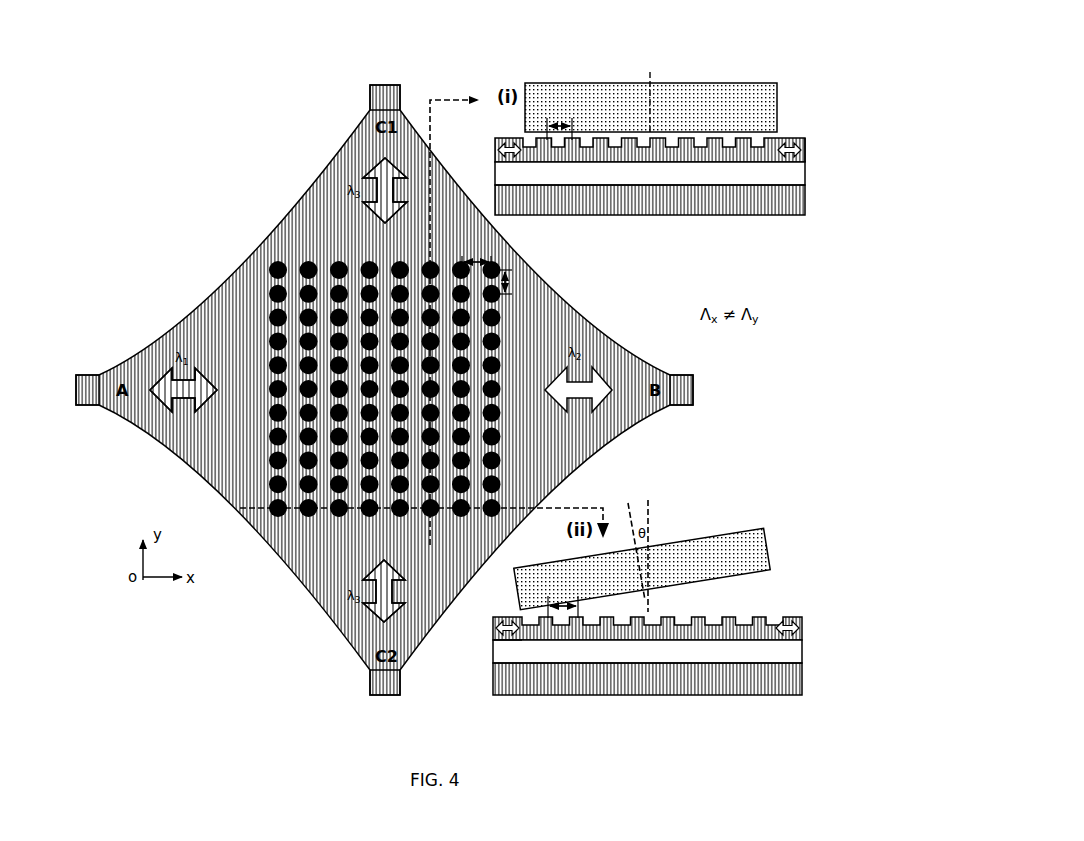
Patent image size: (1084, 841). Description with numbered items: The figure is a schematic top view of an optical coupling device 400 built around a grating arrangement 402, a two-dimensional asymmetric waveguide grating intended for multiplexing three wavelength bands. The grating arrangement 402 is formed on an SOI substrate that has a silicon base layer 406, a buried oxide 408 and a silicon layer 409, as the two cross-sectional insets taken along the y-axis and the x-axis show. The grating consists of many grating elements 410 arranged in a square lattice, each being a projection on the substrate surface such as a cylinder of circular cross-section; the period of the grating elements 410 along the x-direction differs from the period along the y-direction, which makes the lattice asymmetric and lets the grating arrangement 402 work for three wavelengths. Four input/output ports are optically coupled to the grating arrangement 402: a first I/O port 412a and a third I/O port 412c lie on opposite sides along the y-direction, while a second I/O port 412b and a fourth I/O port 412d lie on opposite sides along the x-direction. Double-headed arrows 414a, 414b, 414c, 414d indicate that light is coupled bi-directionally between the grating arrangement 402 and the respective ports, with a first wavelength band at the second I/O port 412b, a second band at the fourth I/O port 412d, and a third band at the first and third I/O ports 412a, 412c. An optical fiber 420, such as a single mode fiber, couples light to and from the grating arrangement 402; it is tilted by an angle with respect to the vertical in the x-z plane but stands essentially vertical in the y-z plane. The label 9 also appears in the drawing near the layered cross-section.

The optical coupling device 400 is at (188, 58).
The grating arrangement 402 is at (787, 108).
The silicon base layer 406 is at (765, 205).
The buried oxide 408 is at (649, 412).
The silicon layer 409 is at (535, 638).
The grating element 410 is at (302, 262).
The first I/O port 412a is at (372, 85).
The second I/O port 412b is at (84, 376).
The third I/O port 412c is at (378, 694).
The fourth I/O port 412d is at (694, 380).
The double-headed arrow 414a is at (380, 168).
The double-headed arrow 414b is at (165, 383).
The double-headed arrow 414c is at (388, 612).
The double-headed arrow 414d is at (612, 396).
The optical fiber 420 is at (738, 93).
The section line / grating layer edge 9 is at (808, 163).